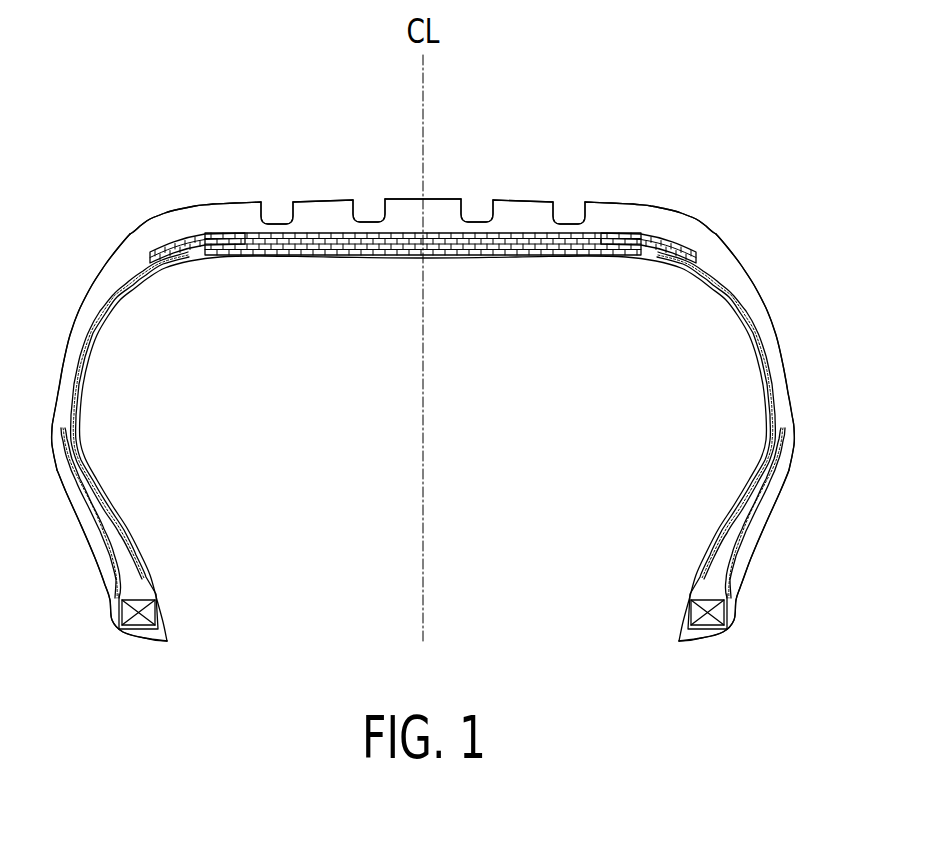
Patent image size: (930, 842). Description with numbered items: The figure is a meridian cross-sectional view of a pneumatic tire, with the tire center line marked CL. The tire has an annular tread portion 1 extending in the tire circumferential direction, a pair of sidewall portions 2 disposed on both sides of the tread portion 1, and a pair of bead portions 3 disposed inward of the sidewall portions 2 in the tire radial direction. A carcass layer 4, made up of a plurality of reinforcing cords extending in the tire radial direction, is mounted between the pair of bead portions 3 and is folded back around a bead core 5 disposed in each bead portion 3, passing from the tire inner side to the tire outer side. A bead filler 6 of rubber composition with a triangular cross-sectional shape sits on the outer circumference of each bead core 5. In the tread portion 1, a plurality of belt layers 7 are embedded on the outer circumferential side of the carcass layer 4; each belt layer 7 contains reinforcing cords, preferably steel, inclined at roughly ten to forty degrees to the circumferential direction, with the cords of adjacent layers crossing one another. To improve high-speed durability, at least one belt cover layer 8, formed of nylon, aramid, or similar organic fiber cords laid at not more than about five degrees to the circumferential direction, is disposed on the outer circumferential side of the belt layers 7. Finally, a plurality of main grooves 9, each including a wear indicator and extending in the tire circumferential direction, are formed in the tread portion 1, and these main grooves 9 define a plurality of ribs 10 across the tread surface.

The tread portion 1 is at (437, 192).
The sidewall portion 2 is at (57, 360).
The bead portion 3 is at (105, 603).
The carcass layer 4 is at (104, 310).
The bead core 5 is at (157, 611).
The bead filler 6 is at (130, 578).
The belt layer 7 is at (577, 263).
The belt cover layer 8 is at (200, 243).
The main groove 9 is at (283, 202).
The rib 10 is at (245, 200).